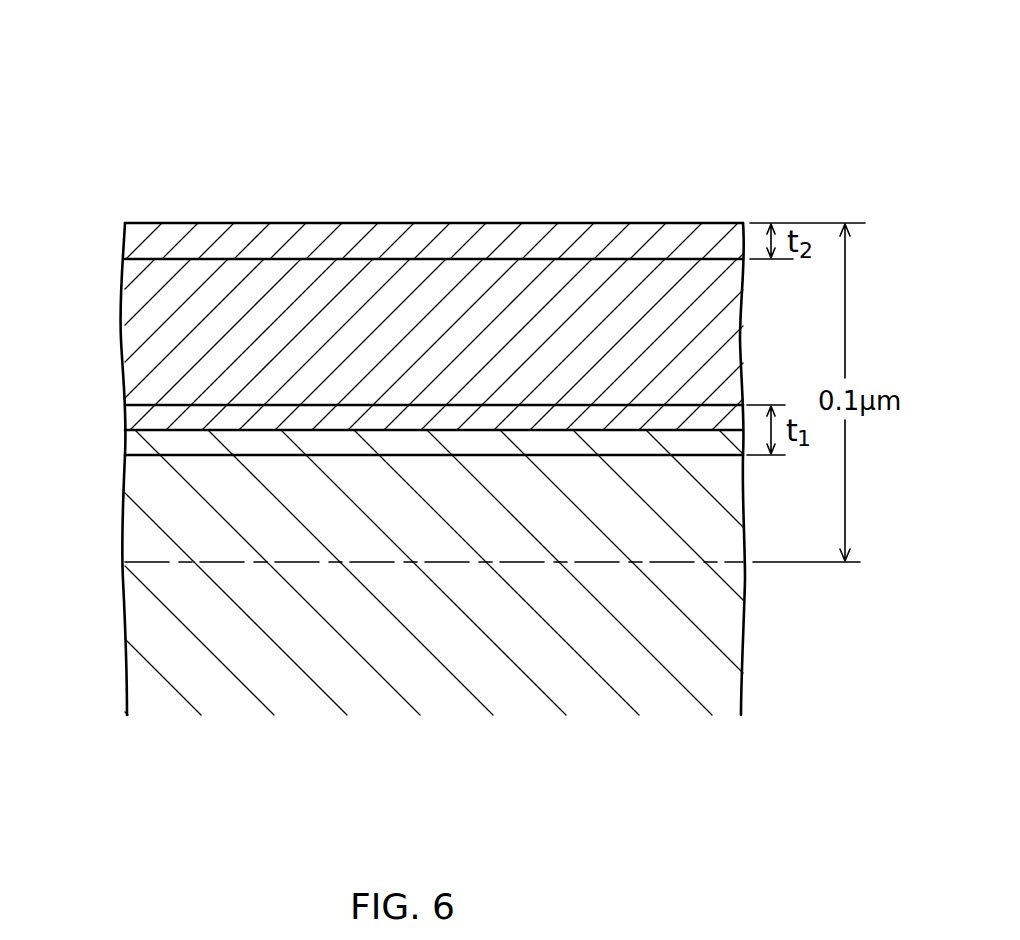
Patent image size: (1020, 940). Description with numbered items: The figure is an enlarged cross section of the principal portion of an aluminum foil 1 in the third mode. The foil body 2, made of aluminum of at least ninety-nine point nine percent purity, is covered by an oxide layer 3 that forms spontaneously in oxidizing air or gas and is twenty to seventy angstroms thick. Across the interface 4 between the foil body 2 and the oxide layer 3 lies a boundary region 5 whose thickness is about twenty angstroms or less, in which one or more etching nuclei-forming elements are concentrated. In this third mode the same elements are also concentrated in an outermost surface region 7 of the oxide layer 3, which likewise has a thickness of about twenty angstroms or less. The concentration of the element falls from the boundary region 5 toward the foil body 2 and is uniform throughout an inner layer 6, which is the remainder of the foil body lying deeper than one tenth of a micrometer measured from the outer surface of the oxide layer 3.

The aluminum foil 1 is at (677, 169).
The foil body 2 is at (148, 503).
The oxide layer 3 is at (138, 323).
The interface 4 is at (683, 430).
The boundary region 5 is at (133, 443).
The inner layer 6 is at (143, 632).
The outermost surface region 7 is at (185, 226).